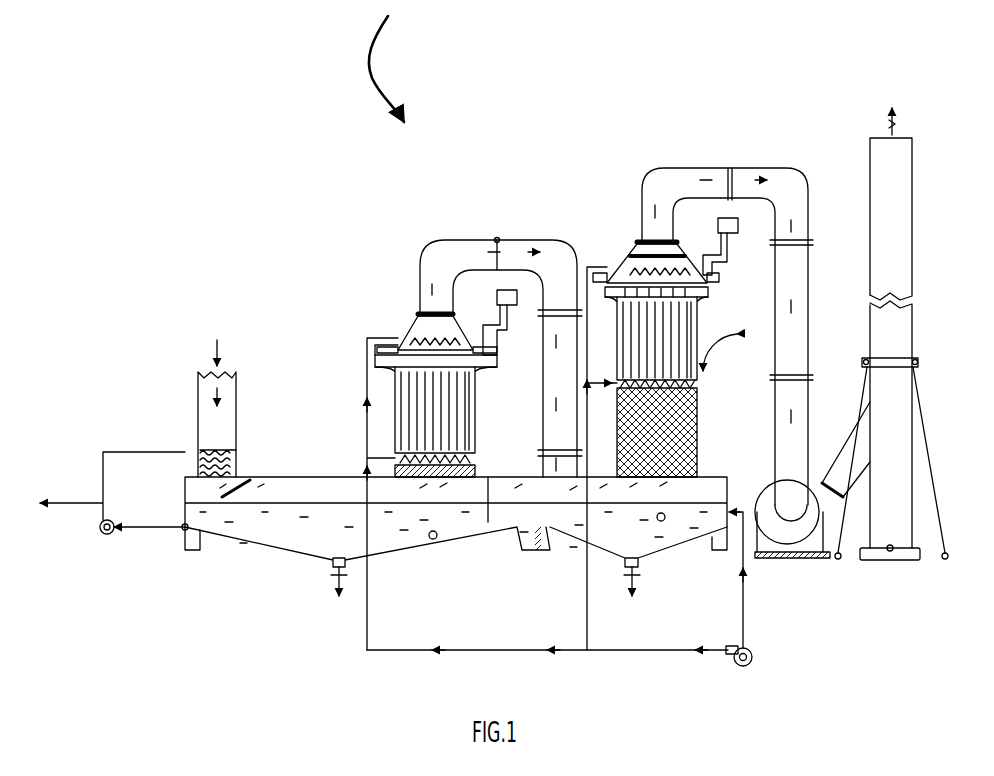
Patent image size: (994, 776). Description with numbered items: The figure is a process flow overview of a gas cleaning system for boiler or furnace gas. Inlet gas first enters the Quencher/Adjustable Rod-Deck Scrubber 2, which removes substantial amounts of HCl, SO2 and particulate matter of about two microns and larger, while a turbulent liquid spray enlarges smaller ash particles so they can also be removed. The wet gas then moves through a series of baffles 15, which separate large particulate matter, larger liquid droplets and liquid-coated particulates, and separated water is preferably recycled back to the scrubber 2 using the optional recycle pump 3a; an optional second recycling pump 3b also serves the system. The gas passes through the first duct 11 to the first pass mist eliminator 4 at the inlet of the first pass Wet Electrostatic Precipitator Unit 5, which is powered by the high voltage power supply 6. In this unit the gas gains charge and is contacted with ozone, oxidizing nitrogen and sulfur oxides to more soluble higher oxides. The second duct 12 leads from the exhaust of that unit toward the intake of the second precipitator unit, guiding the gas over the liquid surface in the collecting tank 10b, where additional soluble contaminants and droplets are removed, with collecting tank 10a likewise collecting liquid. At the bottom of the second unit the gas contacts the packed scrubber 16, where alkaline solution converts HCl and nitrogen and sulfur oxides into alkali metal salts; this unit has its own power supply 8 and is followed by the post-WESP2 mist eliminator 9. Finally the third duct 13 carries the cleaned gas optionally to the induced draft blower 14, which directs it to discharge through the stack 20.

The Quencher/Adjustable Rod-Deck Scrubber (ARDS) 2 is at (237, 398).
The recycle pump 3a is at (100, 533).
The recycling pump 3b is at (745, 667).
The first pass mist eliminator 4 is at (476, 467).
The first pass Wet Electrostatic Precipitator Unit (WESP1) 5 is at (392, 402).
The high voltage power supply 6 is at (515, 298).
The power supply 8 is at (733, 222).
The post-WESP2 mist eliminator 9 is at (725, 298).
The collecting tank 10a is at (292, 530).
The collecting tank 10b is at (648, 540).
The first duct 11 is at (330, 490).
The second duct 12 is at (471, 240).
The third duct 13 is at (676, 168).
The induced draft blower 14 is at (796, 537).
The baffles 15 is at (235, 478).
The packed scrubber 16 is at (700, 470).
The stack 20 is at (892, 208).